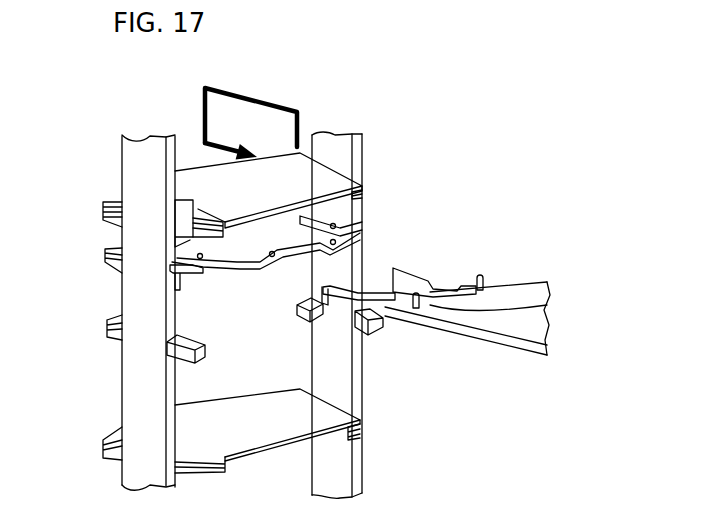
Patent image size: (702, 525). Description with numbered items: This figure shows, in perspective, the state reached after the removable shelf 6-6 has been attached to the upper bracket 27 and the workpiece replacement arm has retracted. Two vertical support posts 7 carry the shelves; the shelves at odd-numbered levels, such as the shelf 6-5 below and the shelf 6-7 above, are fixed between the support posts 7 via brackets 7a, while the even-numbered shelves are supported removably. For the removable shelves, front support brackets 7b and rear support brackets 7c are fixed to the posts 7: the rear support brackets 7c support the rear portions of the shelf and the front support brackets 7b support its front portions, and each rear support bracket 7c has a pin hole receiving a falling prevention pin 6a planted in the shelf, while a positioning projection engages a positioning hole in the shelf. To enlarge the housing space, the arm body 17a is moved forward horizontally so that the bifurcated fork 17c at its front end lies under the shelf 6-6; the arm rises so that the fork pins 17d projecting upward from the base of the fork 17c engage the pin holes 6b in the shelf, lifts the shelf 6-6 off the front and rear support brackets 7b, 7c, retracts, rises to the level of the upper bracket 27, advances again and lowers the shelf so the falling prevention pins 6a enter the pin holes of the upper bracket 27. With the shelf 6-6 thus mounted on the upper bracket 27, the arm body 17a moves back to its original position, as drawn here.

The support post 7 is at (133, 480).
The bracket 7a is at (103, 210).
The front support bracket 7b is at (107, 333).
The rear support bracket 7c is at (172, 351).
The shelf 6-5 is at (203, 422).
The removable shelf 6-6 is at (313, 264).
The shelf 6-7 is at (200, 185).
The falling prevention pin 6a is at (190, 249).
The pin hole 6b is at (262, 258).
The upper bracket 27 is at (107, 263).
The arm body 17a is at (512, 347).
The fork 17c is at (405, 280).
The fork pin 17d is at (432, 300).